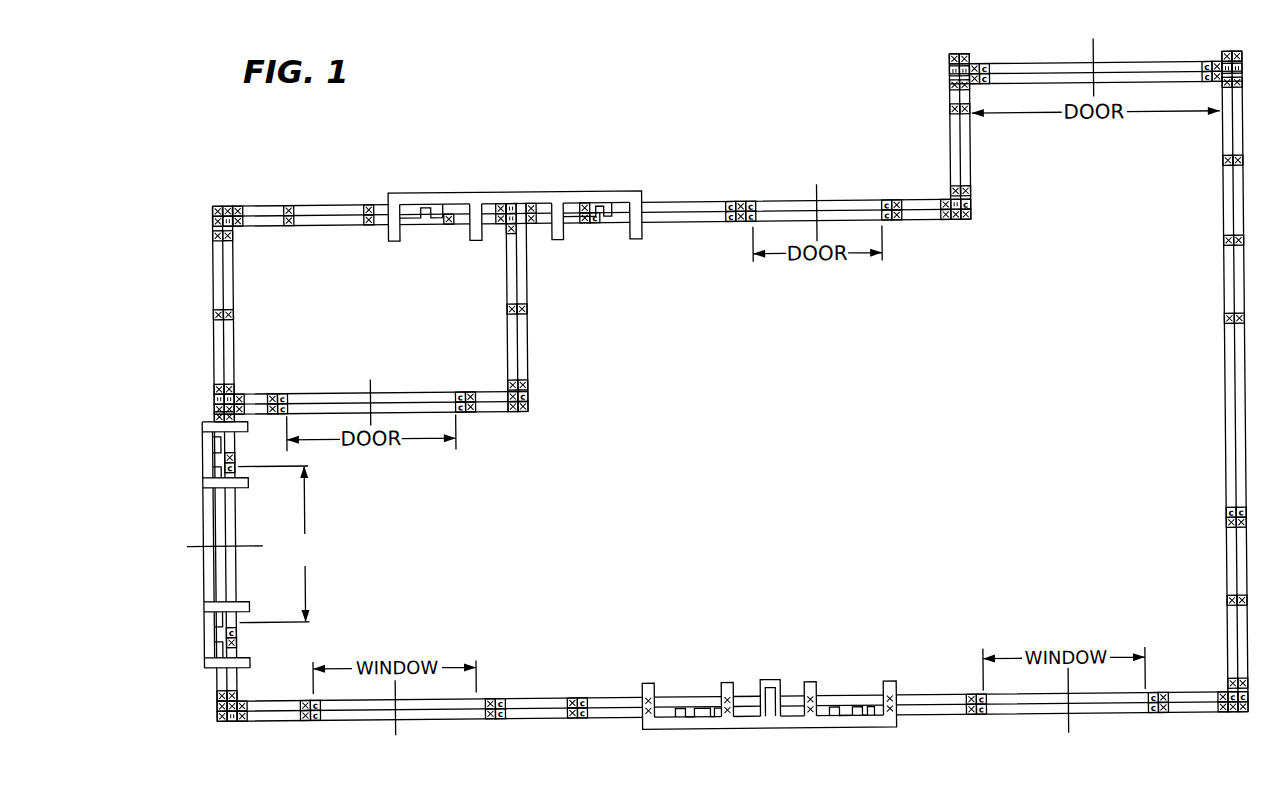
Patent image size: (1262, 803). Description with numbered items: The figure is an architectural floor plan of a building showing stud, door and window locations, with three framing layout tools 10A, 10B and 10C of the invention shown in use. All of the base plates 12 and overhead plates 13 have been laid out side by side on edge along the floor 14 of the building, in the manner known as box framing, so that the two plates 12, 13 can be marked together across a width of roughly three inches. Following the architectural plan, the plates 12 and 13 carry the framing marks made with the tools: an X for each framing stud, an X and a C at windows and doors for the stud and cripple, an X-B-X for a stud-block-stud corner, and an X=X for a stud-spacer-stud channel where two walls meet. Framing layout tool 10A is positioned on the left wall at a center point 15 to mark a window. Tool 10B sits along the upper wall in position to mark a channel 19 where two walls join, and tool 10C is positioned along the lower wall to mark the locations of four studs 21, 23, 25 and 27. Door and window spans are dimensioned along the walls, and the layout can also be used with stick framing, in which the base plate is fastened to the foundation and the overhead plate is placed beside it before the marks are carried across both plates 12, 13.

The framing layout tool 10A is at (198, 620).
The framing layout tool 10B is at (596, 188).
The framing layout tool 10C is at (761, 700).
The base plate 12 is at (685, 201).
The overhead plate 13 is at (683, 224).
The floor 14 is at (1074, 431).
The center point 15 is at (268, 545).
The channel 19 is at (398, 308).
The stud 21 is at (646, 682).
The stud 23 is at (728, 682).
The stud 25 is at (810, 682).
The stud 27 is at (890, 682).